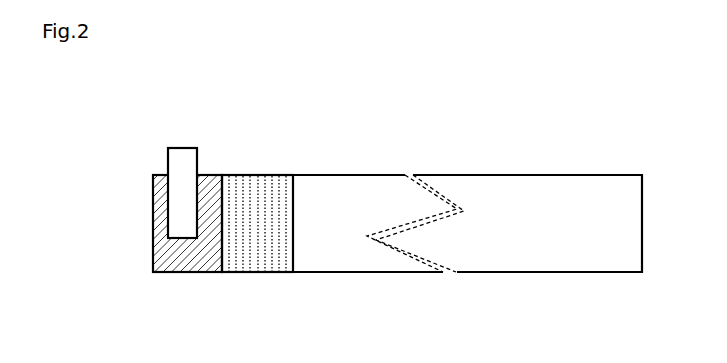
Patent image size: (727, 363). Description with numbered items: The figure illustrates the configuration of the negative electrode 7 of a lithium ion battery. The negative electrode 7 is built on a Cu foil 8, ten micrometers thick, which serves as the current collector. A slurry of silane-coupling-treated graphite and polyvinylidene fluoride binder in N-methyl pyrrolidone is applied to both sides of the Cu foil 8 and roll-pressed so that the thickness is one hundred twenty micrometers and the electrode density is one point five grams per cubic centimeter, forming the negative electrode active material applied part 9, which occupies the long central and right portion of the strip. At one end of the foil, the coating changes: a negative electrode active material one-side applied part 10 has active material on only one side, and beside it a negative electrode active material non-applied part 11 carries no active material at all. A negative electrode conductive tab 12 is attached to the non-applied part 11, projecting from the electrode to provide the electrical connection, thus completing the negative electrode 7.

The negative electrode 7 is at (132, 192).
The Cu foil 8 is at (340, 175).
The negative electrode active material applied part 9 is at (323, 192).
The negative electrode active material one-side applied part 10 is at (255, 250).
The negative electrode active material non-applied part 11 is at (170, 252).
The negative electrode conductive tab 12 is at (183, 158).